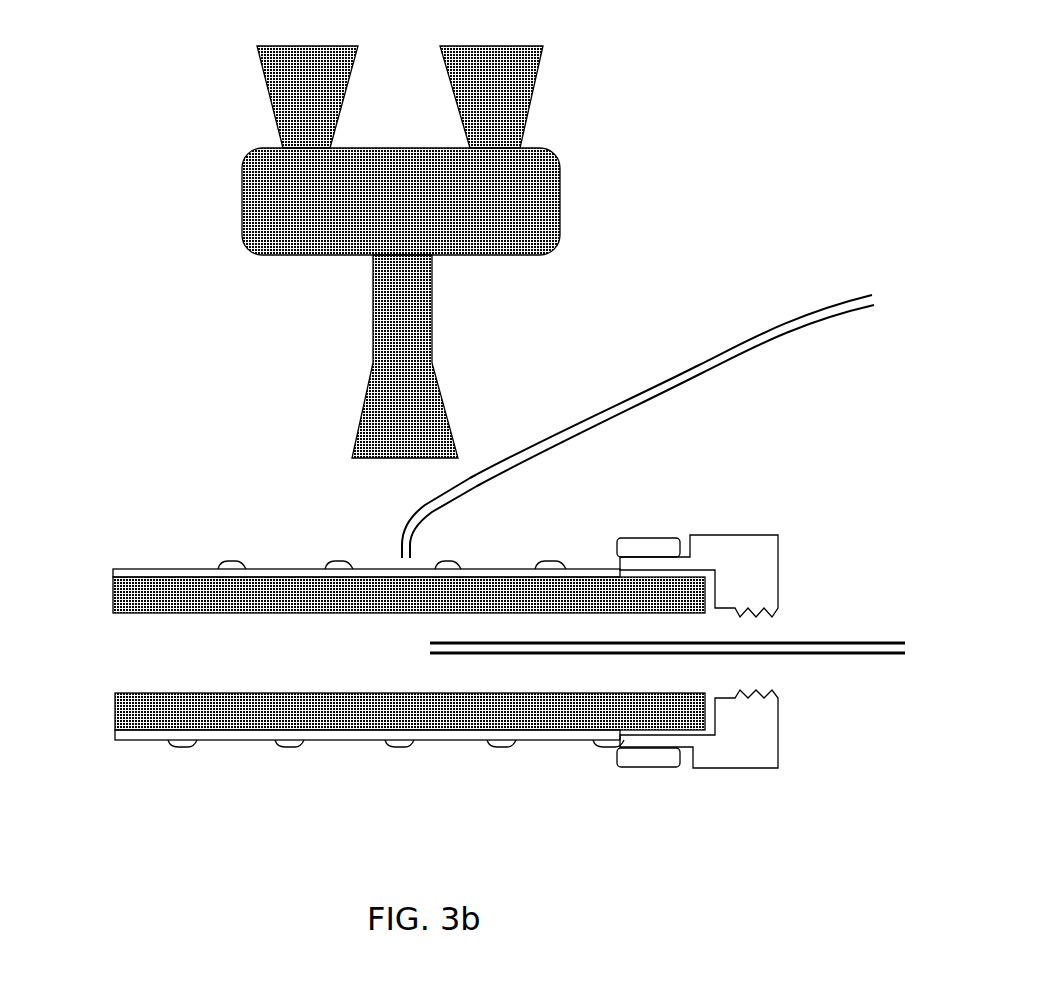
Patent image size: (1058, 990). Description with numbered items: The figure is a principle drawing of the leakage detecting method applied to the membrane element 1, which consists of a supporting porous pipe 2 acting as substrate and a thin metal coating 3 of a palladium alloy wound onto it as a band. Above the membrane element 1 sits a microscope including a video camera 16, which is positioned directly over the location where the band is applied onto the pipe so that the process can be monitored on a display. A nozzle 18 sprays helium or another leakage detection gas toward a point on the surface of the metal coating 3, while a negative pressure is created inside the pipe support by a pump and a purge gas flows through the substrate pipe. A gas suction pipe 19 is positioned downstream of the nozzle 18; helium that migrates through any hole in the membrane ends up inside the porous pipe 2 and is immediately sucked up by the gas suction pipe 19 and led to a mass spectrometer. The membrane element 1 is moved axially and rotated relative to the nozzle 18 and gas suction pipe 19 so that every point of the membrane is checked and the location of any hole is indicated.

The membrane element 1 is at (237, 765).
The porous pipe 2 is at (113, 594).
The metal coating 3 is at (113, 573).
The microscope including a video camera 16 is at (198, 202).
The nozzle 18 is at (397, 545).
The gas suction pipe 19 is at (443, 657).